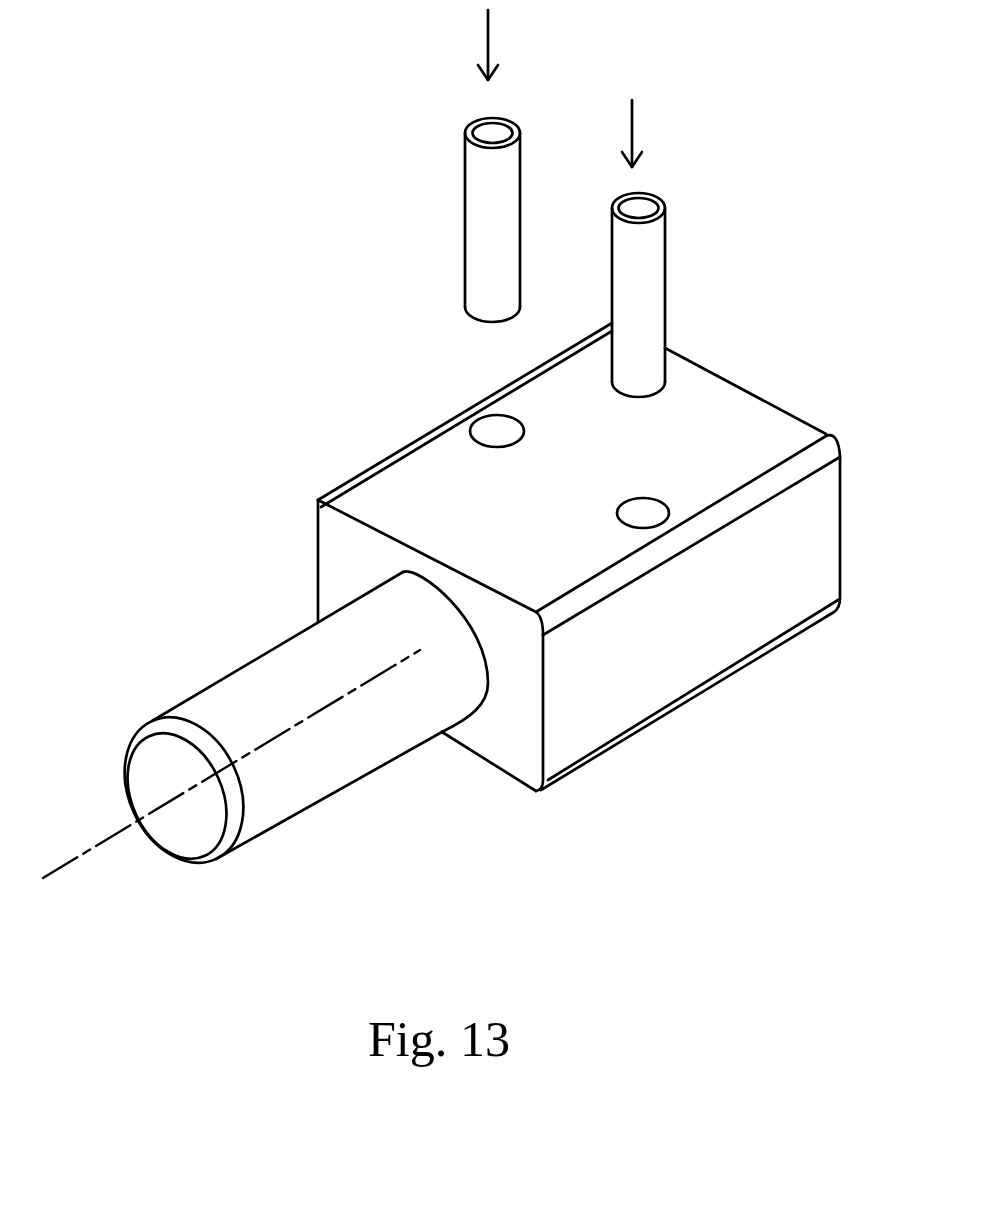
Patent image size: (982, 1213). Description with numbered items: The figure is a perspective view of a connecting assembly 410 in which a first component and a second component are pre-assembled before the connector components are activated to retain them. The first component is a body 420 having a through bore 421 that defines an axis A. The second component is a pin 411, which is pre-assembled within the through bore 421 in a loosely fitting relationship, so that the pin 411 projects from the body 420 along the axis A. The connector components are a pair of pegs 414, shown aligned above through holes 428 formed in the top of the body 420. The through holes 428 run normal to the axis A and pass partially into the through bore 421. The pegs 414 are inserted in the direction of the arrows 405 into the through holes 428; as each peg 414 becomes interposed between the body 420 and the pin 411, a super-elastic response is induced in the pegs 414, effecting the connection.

The arrows 405 is at (488, 33).
The connecting assembly 410 is at (170, 288).
The pin 411 is at (261, 680).
The pegs 414 is at (481, 197).
The first component body 420 is at (793, 610).
The through bore 421 is at (487, 693).
The through holes 428 is at (505, 428).
The axis A is at (88, 850).